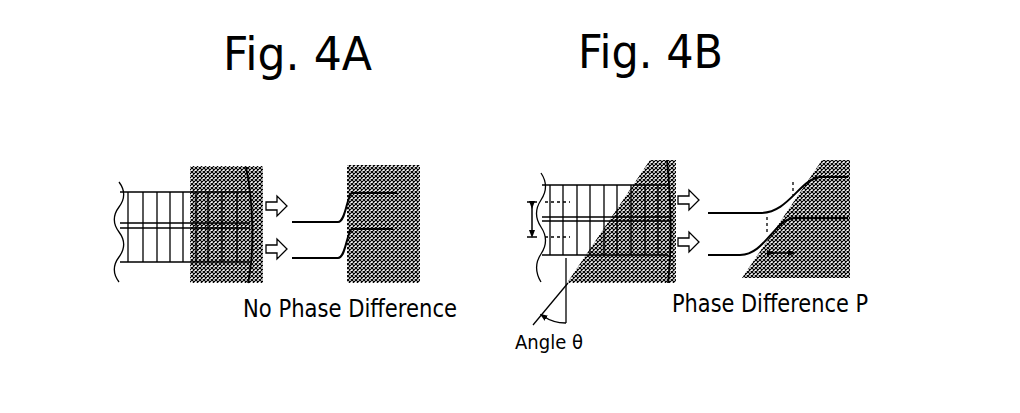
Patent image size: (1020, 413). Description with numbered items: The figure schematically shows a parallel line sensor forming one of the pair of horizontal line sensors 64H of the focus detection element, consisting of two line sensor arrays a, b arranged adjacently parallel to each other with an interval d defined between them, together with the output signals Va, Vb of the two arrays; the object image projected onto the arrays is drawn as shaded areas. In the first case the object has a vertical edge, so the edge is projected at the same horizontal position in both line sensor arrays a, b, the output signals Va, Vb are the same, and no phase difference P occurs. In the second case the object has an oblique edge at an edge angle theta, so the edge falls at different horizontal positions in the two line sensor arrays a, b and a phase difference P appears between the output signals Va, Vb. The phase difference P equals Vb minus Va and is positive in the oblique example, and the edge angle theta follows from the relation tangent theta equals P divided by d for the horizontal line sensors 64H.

In FIG. 4A, the horizontal line sensor 64H is at (90, 205).
In FIG. 4B, the horizontal line sensor 64H is at (495, 180).
In FIG. 4A, the line sensor array a is at (127, 218).
In FIG. 4B, the line sensor array a is at (541, 192).
In FIG. 4A, the line sensor array b is at (127, 248).
In FIG. 4B, the line sensor array b is at (541, 250).
In FIG. 4A, the output signal Va is at (319, 221).
In FIG. 4B, the output signal Va is at (731, 213).
In FIG. 4A, the output signal Vb is at (324, 258).
In FIG. 4B, the output signal Vb is at (738, 255).
In FIG. 4B, the interval d is at (541, 219).
In FIG. 4B, the phase difference P is at (780, 217).